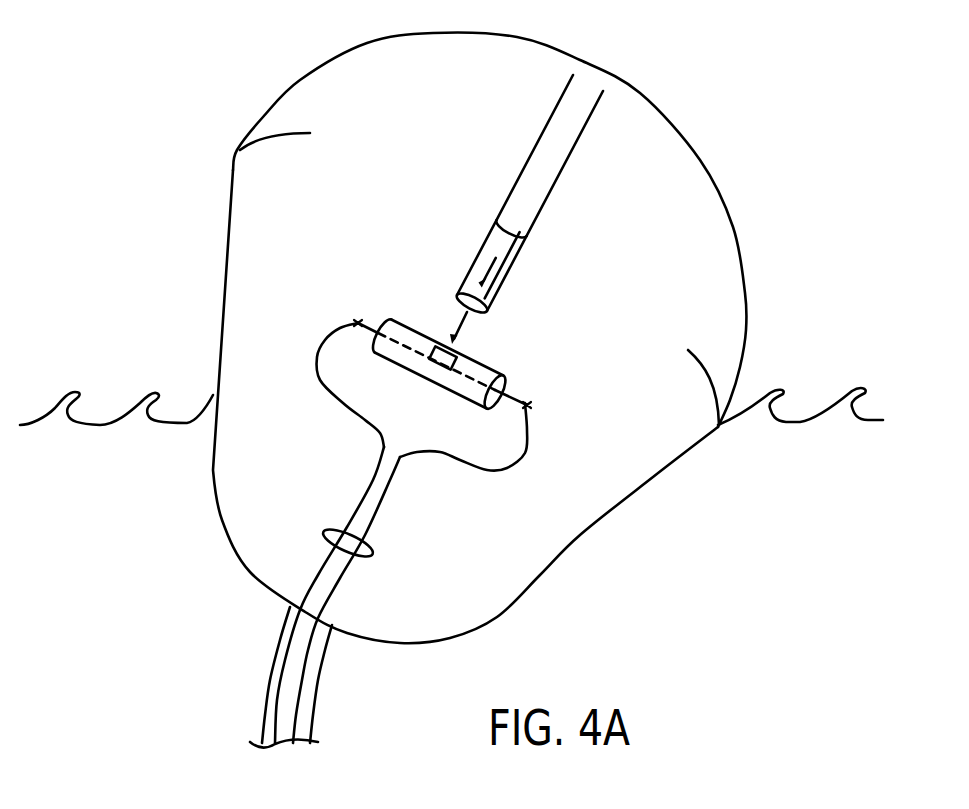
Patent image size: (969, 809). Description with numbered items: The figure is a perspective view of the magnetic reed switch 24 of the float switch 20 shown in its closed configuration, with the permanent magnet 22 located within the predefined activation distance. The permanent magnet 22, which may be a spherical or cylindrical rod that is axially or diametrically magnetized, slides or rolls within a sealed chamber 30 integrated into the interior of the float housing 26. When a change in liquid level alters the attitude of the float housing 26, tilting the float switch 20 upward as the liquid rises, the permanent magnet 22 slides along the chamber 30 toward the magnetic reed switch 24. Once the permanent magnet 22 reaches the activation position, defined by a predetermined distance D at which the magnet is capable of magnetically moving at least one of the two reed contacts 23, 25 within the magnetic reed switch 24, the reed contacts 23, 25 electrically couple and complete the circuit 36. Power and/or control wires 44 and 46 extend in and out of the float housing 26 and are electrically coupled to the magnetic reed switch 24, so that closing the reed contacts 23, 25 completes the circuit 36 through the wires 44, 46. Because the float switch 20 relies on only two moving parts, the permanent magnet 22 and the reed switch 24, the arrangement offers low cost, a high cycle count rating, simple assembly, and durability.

The float switch 20 is at (766, 91).
The permanent magnet 22 is at (470, 272).
The reed contact 23 is at (458, 357).
The magnetic reed switch 24 is at (462, 398).
The reed contact 25 is at (417, 367).
The float housing 26 is at (230, 170).
The sealed chamber 30 is at (552, 148).
The circuit 36 is at (373, 556).
The power and/or control wire 44 is at (328, 340).
The power and/or control wire 46 is at (517, 468).
The predetermined distance D is at (457, 340).